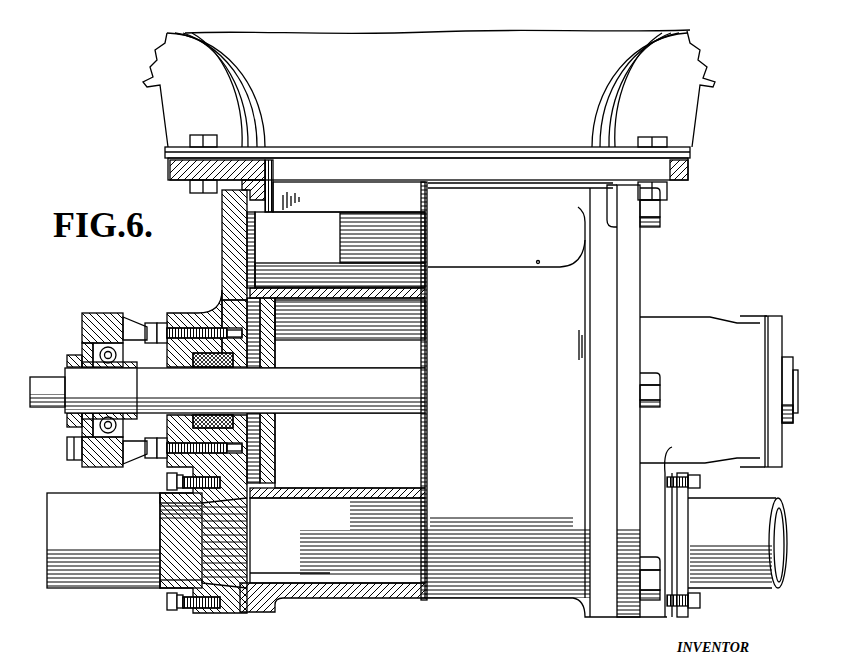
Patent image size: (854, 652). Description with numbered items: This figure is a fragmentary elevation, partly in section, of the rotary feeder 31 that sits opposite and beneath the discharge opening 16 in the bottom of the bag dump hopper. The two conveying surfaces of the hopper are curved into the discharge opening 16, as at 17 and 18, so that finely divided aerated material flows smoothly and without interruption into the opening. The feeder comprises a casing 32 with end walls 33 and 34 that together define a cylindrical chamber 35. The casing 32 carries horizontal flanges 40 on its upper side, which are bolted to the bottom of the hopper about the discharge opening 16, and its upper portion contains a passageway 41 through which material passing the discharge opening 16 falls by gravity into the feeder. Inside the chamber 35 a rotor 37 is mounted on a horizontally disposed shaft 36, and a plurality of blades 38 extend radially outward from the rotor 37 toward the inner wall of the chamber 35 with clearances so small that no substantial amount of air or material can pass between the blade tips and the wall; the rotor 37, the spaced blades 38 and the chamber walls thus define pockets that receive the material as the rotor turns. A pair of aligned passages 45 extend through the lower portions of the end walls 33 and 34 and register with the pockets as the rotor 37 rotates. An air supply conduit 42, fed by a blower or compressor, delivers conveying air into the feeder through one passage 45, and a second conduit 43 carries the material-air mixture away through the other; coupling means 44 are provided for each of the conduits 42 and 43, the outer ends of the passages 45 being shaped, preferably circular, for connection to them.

The discharge opening 16 is at (429, 88).
The curved portion of conveying surface 17 is at (258, 106).
The curved portion of conveying surface 18 is at (605, 97).
The horizontal flanges 40 is at (167, 170).
The passageway 41 is at (345, 182).
The blades 38 is at (247, 250).
The end wall 33 is at (235, 289).
The rotor 37 is at (416, 290).
The shaft 36 is at (356, 405).
The end wall 34 is at (633, 290).
The rotary feeder 31 is at (477, 600).
The casing 32 is at (365, 597).
The cylindrical chamber 35 is at (310, 590).
The aligned passages 45 is at (230, 558).
The second conduit 43 is at (87, 588).
The coupling means 44 is at (183, 612).
The air supply conduit 42 is at (738, 587).